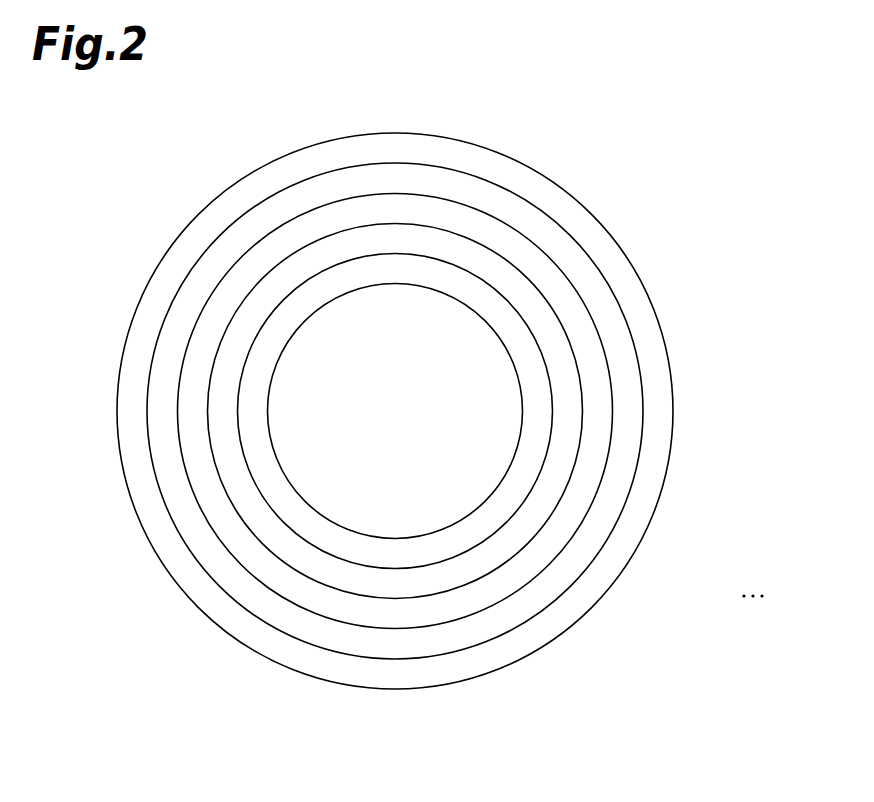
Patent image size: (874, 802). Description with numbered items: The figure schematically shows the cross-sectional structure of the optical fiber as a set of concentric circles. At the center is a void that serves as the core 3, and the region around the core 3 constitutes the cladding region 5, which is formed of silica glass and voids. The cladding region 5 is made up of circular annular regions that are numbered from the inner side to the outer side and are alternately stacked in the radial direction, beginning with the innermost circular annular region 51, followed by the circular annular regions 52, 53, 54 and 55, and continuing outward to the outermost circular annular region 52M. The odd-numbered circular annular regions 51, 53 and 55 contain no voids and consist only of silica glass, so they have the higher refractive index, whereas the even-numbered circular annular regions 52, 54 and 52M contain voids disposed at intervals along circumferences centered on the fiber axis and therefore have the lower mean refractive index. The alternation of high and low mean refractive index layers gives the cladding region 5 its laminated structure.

The core 3 is at (474, 357).
The cladding region 5 is at (477, 430).
The circular annular region 51 is at (521, 478).
The circular annular region 52 is at (556, 478).
The circular annular region 53 is at (588, 478).
The circular annular region 54 is at (622, 478).
The circular annular region 55 is at (652, 478).
The circular annular region 52M is at (807, 598).